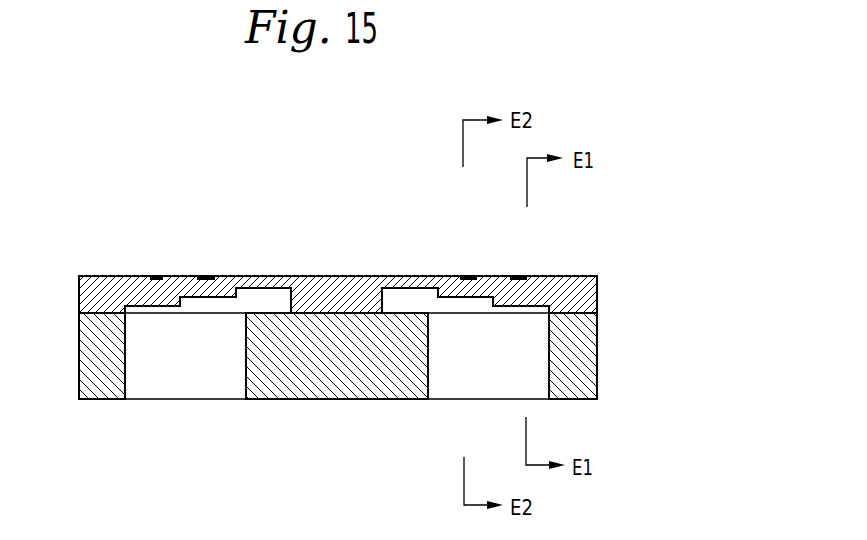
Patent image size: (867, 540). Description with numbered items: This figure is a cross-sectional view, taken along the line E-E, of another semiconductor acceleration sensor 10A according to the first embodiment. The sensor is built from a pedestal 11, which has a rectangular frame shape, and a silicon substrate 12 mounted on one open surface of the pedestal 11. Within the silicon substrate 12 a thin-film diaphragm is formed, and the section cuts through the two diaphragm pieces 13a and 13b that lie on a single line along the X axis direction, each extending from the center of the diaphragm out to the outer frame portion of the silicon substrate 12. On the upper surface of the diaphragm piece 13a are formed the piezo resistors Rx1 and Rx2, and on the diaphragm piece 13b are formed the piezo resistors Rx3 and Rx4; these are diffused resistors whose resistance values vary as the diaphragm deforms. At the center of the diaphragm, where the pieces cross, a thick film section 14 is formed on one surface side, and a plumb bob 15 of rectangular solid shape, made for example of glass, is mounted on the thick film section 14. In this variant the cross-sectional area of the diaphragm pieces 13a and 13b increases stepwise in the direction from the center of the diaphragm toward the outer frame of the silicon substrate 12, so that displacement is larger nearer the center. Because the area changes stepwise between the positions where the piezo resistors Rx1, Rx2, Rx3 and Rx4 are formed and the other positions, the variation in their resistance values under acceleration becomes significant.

The semiconductor acceleration sensor 10A is at (168, 199).
The pedestal 11 is at (88, 358).
The silicon substrate 12 is at (110, 276).
The diaphragm piece 13a is at (418, 276).
The diaphragm piece 13b is at (233, 276).
The thick film section 14 is at (330, 276).
The plumb bob 15 is at (307, 380).
The piezo resistor Rx1 is at (518, 276).
The piezo resistor Rx2 is at (468, 276).
The piezo resistor Rx3 is at (205, 276).
The piezo resistor Rx4 is at (155, 276).